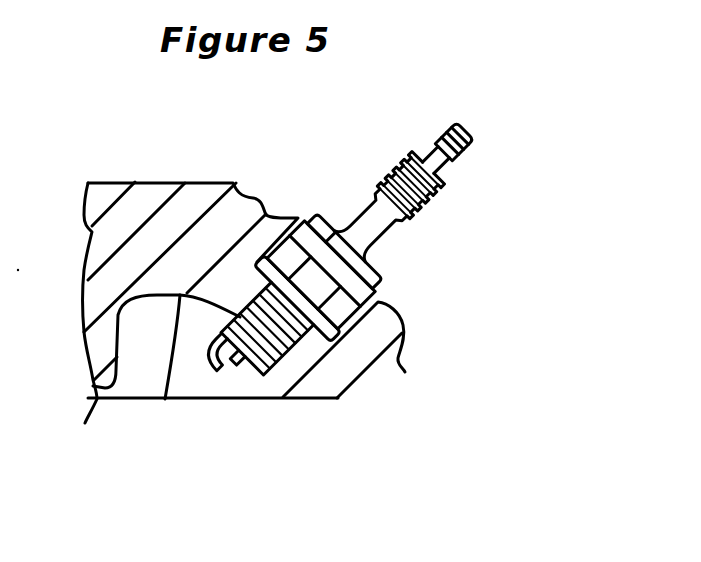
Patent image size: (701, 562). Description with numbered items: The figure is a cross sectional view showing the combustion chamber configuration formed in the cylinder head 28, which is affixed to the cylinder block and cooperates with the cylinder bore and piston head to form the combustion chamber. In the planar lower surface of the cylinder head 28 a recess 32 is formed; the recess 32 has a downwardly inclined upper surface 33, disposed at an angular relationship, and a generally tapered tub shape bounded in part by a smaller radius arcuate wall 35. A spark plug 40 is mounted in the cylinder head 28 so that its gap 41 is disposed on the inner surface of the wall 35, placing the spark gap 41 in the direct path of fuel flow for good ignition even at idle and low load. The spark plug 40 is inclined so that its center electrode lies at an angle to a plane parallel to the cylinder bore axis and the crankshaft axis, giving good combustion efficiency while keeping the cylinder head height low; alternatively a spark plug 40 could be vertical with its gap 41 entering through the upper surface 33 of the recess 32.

The cylinder head 28 is at (148, 190).
The recess 32 is at (161, 344).
The upper surface 33 is at (167, 400).
The smaller radius arcuate wall 35 is at (285, 396).
The spark plug 40 is at (395, 230).
The gap 41 is at (222, 372).